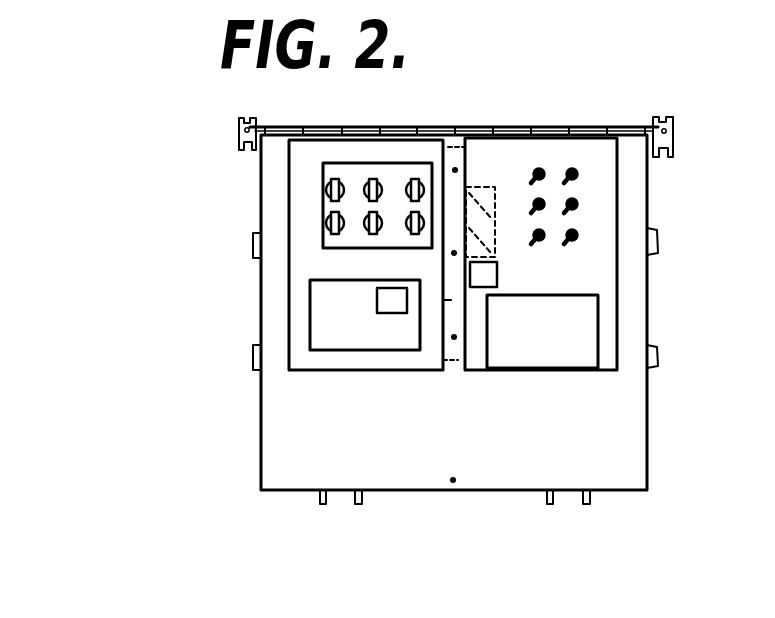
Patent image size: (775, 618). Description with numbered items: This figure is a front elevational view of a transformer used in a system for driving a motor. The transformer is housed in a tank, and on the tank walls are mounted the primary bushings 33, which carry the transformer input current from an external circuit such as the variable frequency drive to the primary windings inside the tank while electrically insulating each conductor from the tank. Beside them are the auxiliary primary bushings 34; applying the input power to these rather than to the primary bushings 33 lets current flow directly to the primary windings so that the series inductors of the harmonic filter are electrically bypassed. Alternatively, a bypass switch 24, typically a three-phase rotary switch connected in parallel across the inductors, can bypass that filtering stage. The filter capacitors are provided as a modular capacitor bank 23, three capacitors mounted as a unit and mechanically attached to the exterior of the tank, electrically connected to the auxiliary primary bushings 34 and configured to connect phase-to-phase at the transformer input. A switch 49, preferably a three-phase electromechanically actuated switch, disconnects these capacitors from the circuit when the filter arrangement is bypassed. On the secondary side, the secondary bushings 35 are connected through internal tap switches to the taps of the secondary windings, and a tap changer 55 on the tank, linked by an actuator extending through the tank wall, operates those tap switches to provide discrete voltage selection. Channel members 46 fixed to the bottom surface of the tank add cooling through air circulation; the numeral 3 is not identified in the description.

The enclosure 3 is at (507, 303).
The capacitor bank 23 is at (306, 328).
The bypass switch 24 is at (497, 287).
The primary bushings 33 is at (322, 190).
The auxiliary primary bushings 34 is at (322, 222).
The secondary bushings 35 is at (584, 183).
The channel members 46 is at (367, 498).
The switch 49 is at (377, 313).
The tap changer 55 is at (506, 254).